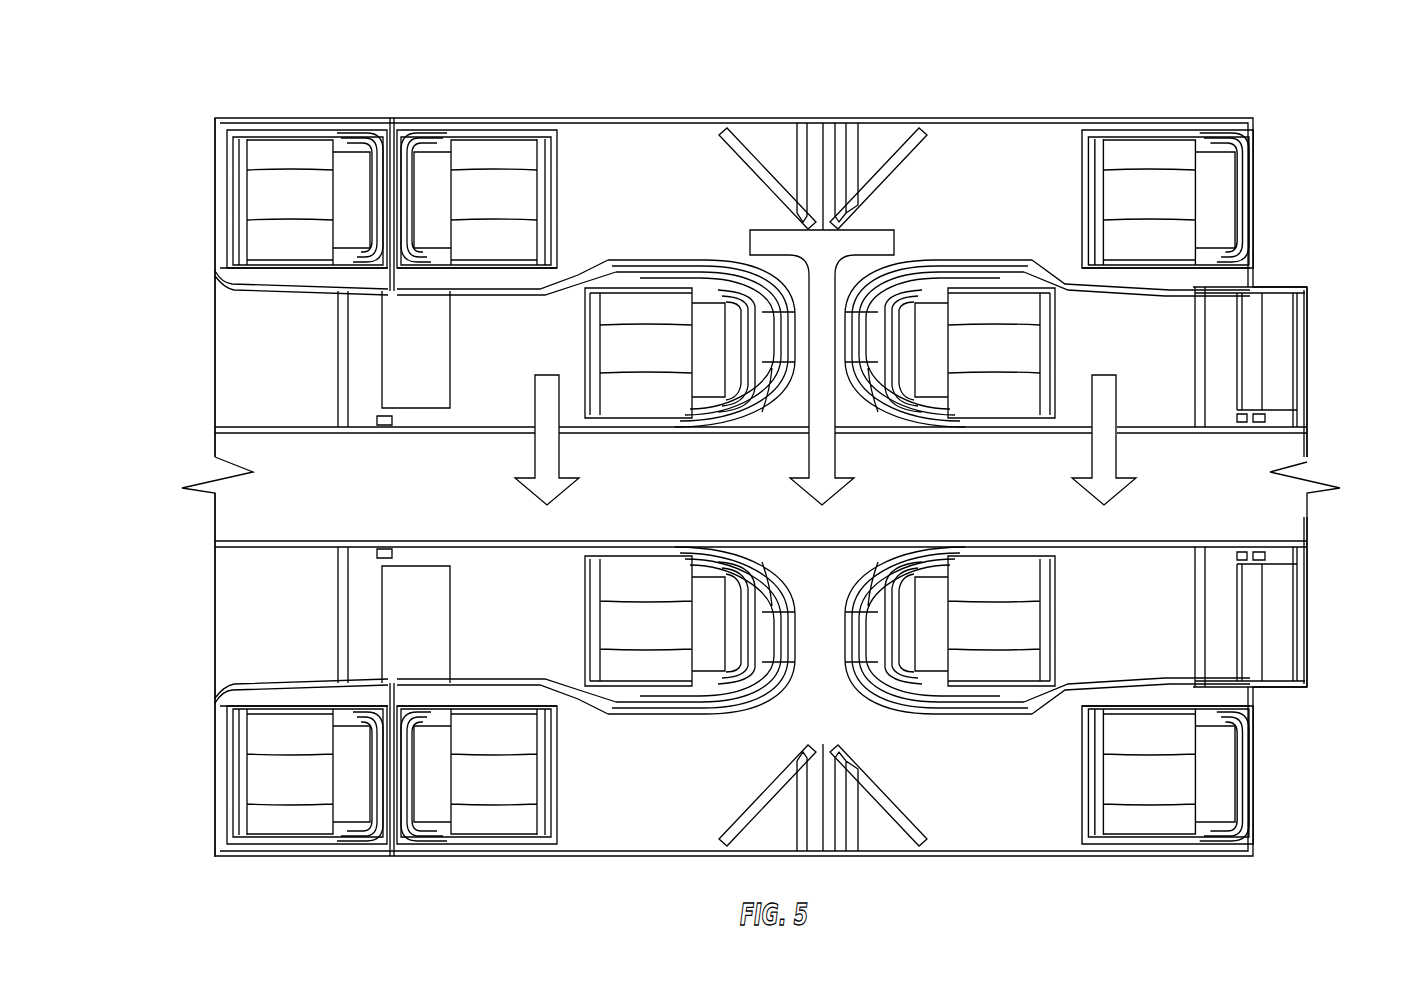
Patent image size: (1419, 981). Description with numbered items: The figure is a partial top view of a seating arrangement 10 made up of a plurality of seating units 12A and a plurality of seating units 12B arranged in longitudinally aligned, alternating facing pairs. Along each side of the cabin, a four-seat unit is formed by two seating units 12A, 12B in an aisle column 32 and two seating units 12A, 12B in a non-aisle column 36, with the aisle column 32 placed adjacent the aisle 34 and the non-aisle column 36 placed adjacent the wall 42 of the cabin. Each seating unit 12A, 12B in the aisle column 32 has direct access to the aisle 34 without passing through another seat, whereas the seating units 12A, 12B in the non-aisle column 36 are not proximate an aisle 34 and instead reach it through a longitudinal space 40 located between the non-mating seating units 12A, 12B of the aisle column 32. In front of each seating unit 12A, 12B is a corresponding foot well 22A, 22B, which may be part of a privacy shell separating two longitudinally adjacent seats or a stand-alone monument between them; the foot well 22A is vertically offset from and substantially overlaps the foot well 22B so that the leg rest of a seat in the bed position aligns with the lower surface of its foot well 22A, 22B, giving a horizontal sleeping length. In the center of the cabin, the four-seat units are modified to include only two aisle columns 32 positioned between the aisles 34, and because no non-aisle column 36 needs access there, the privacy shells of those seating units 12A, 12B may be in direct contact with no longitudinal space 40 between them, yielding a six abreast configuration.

The seating arrangement 10 is at (158, 136).
The seating unit 12A is at (295, 185).
The seating unit 12B is at (455, 186).
The foot well 22A is at (430, 585).
The foot well 22B is at (1215, 355).
The aisle column 32 is at (235, 363).
The aisle 34 is at (1248, 506).
The non-aisle column 36 is at (225, 200).
The longitudinal space 40 is at (818, 607).
The wall 42 is at (712, 120).